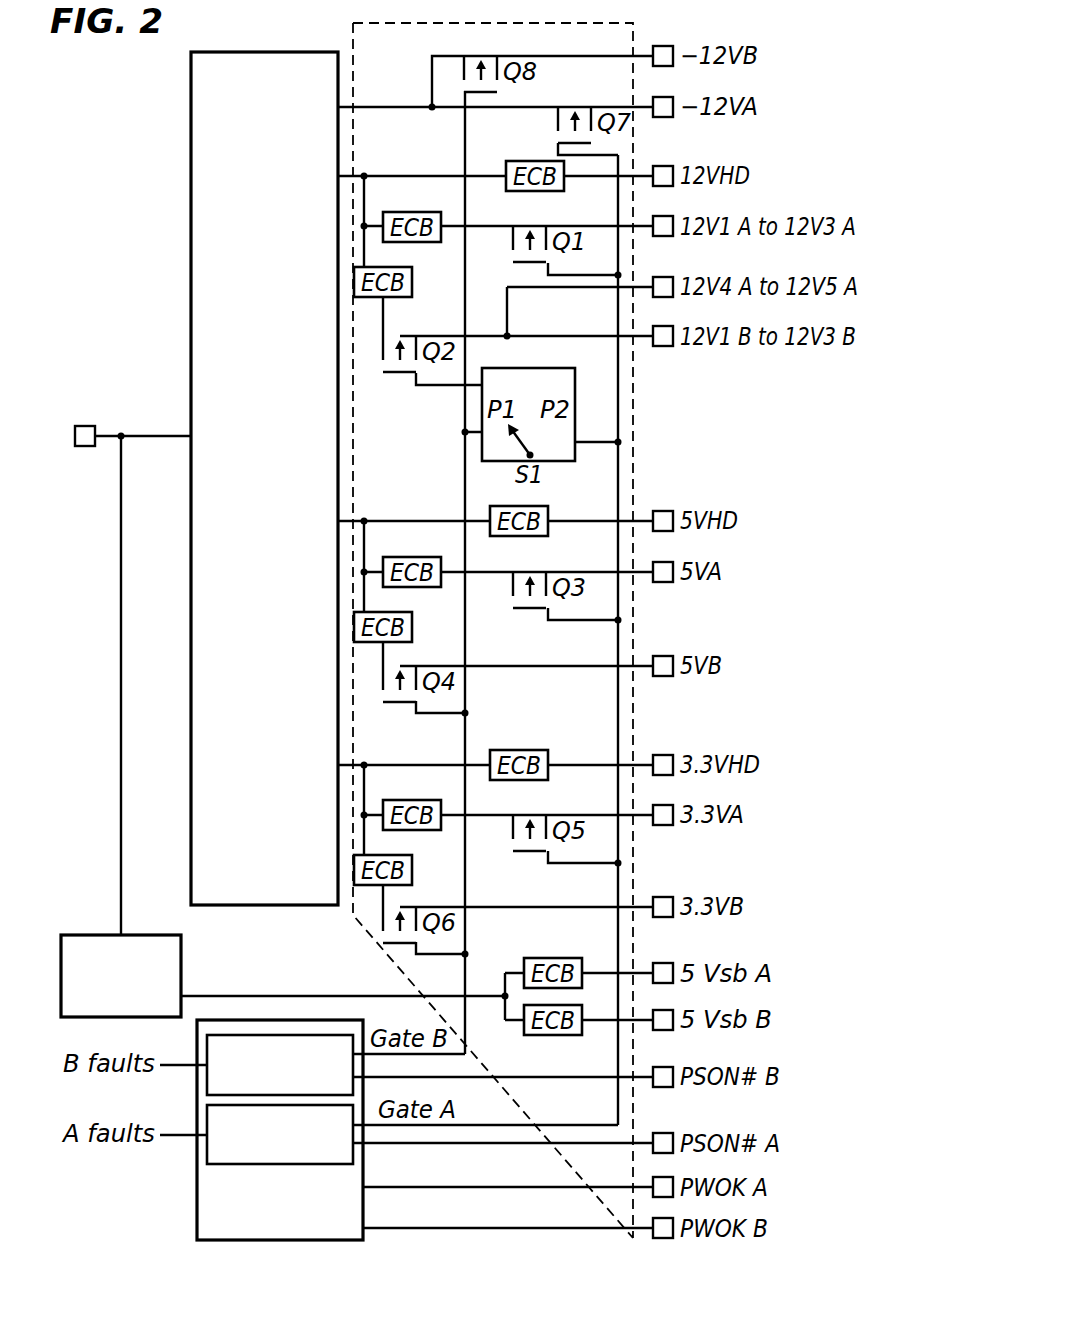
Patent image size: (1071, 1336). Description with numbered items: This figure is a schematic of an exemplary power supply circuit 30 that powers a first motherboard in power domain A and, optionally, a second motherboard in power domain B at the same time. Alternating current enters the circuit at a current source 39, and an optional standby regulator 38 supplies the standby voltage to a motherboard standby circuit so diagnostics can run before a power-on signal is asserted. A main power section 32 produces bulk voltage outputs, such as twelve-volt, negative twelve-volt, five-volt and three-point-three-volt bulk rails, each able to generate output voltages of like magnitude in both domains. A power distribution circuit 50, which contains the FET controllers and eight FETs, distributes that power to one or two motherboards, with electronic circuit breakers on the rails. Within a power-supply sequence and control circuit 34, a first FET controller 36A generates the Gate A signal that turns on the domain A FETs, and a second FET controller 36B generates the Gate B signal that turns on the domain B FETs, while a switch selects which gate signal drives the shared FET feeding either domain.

The power supply circuit 30 is at (797, 105).
The main power section 32 is at (191, 125).
The power-supply sequence and control circuit 34 is at (197, 1192).
The first FET controller 36A is at (343, 1164).
The second FET controller 36B is at (312, 1035).
The standby regulator 38 is at (90, 935).
The current source 39 is at (83, 418).
The power distribution circuit 50 is at (618, 23).